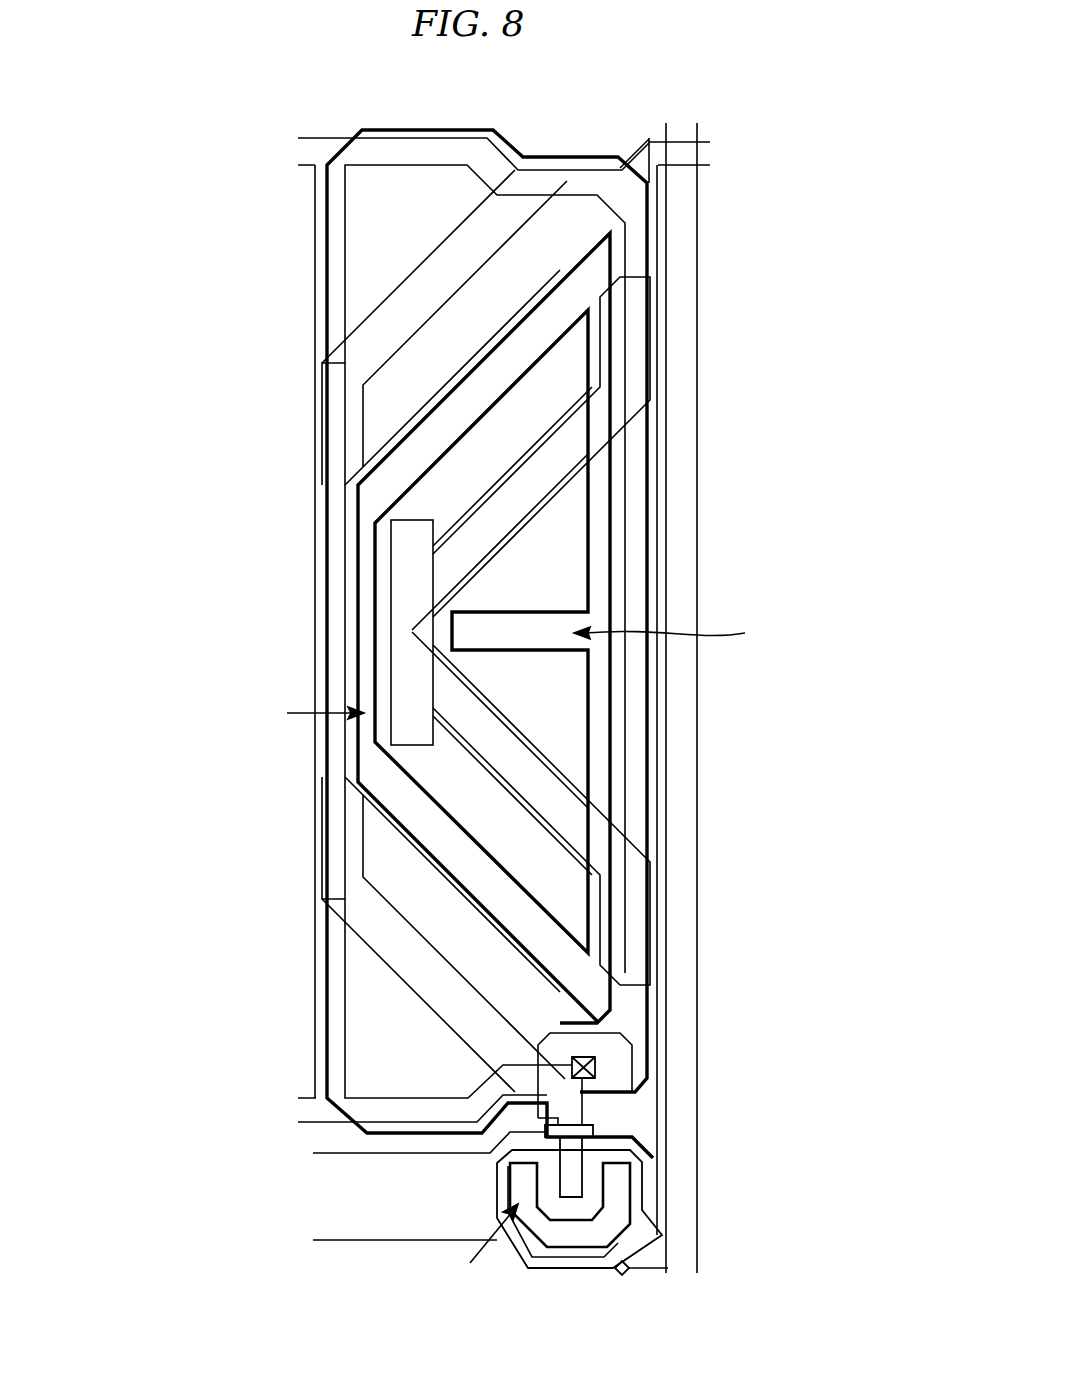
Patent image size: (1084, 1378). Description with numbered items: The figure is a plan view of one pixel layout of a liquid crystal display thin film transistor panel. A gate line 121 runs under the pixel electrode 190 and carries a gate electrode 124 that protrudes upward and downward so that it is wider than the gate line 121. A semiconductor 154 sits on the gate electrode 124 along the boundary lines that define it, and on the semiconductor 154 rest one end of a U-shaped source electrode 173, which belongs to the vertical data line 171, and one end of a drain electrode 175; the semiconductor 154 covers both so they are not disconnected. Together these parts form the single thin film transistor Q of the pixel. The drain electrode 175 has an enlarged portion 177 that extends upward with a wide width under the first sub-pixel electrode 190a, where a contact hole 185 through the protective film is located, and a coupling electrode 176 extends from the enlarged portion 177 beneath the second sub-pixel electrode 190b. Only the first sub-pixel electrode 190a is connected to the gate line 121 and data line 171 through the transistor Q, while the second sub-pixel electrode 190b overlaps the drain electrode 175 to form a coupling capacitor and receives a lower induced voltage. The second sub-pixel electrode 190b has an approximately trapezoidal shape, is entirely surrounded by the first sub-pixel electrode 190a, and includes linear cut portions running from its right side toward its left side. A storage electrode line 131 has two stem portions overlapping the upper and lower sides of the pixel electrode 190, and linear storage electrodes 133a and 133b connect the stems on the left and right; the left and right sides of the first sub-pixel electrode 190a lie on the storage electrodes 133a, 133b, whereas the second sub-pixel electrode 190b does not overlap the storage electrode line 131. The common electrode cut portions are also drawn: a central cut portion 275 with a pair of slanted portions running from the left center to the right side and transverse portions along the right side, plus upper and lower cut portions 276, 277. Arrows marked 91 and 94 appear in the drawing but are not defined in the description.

The storage electrode line 131 is at (320, 138).
The storage electrode 133a is at (345, 1020).
The storage electrode 133b is at (628, 470).
The data line 171 is at (668, 305).
The gate line 121 is at (362, 1240).
The gate electrode 124 is at (543, 1268).
The semiconductor 154 is at (590, 1258).
The source electrode 173 is at (628, 1180).
The drain electrode 175 is at (583, 1190).
The enlarged portion 177 is at (650, 1082).
The contact hole 185 is at (600, 1067).
The coupling electrode 176 is at (390, 562).
The pixel electrode 190 is at (587, 644).
The first sub-pixel electrode 190a is at (647, 750).
The second sub-pixel electrode 190b is at (588, 707).
The central cut portion 275 is at (547, 530).
The upper cut portion 276 is at (397, 288).
The lower cut portion 277 is at (362, 952).
The direction arrow 91 is at (675, 633).
The direction arrow 94 is at (304, 713).
The thin film transistor Q is at (485, 1247).